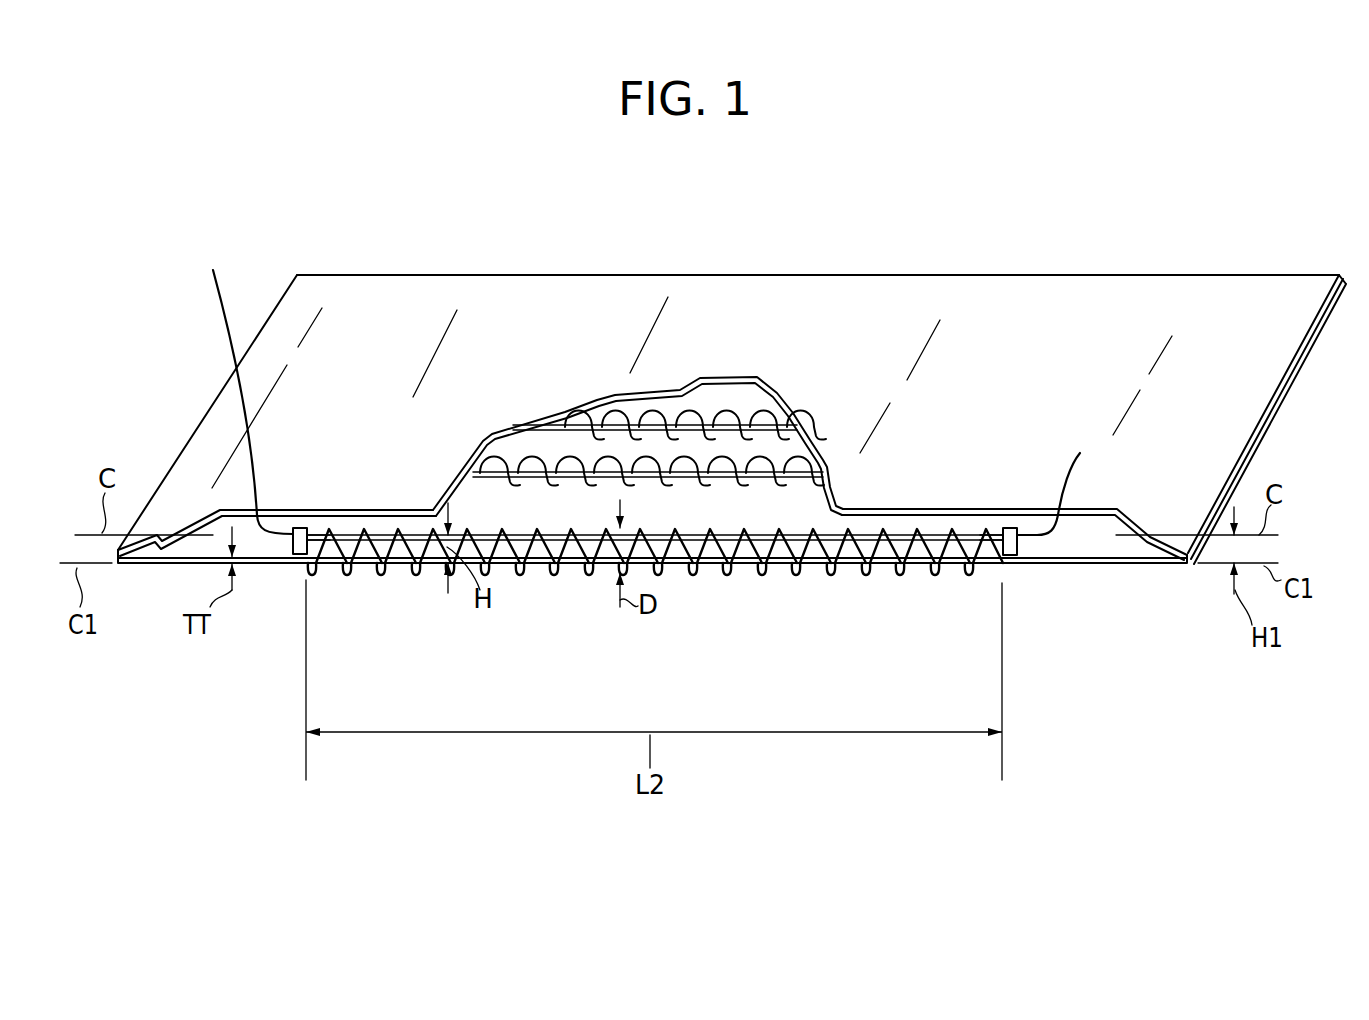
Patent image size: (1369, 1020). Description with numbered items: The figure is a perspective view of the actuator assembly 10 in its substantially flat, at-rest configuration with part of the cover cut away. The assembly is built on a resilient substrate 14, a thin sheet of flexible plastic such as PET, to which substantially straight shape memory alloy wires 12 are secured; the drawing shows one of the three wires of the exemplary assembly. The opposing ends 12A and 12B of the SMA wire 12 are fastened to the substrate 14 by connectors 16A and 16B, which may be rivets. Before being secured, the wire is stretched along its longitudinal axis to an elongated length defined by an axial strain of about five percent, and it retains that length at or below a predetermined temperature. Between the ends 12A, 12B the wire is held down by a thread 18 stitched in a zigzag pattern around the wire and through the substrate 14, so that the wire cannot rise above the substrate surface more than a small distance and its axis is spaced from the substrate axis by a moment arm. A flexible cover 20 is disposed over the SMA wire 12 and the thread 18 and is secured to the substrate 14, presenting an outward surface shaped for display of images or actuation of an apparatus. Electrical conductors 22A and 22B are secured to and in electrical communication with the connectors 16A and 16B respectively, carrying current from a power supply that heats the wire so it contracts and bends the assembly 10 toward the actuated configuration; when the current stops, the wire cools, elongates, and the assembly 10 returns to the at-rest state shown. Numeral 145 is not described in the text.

The actuator assembly 10 is at (840, 232).
The shape memory alloy wire 12 is at (777, 418).
The first end of SMA wire 12A is at (316, 516).
The second end of SMA wire 12B is at (994, 516).
The resilient substrate 14 is at (1274, 411).
The inclined portion of plate 145 is at (483, 493).
The first connector 16A is at (285, 545).
The second connector 16B is at (1022, 547).
The thread 18 is at (567, 458).
The flexible cover 20 is at (1208, 305).
The first electrical conductor 22A is at (217, 303).
The second electrical conductor 22B is at (1080, 453).